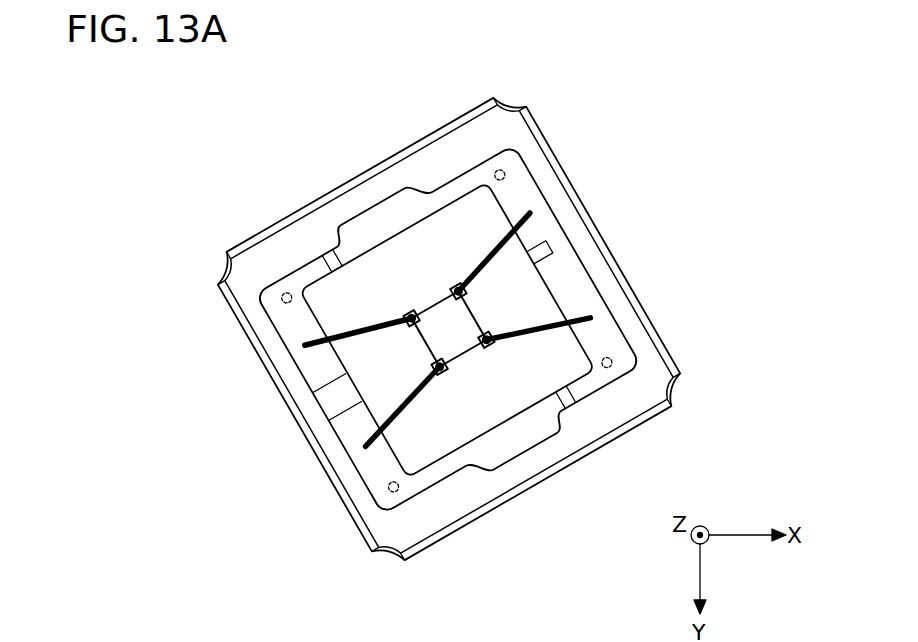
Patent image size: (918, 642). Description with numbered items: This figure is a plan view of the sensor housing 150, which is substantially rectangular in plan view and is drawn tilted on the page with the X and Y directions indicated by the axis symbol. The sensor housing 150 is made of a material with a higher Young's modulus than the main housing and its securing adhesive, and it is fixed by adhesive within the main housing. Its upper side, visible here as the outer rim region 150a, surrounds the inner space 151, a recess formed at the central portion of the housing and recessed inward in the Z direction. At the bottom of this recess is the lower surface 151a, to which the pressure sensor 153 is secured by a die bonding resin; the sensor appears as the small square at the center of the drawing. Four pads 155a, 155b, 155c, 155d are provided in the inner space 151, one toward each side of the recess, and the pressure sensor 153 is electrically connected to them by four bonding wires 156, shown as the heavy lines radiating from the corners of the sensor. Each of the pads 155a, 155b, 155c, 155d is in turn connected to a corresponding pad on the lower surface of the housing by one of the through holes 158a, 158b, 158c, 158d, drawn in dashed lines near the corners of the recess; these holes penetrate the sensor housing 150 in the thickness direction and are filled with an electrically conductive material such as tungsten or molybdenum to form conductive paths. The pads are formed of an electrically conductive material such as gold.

The sensor housing 150 is at (660, 372).
The upper surface of package base 150a is at (400, 177).
The inner space 151 is at (463, 178).
The lower surface 151a is at (340, 283).
The pressure sensor 153 is at (462, 365).
The pad 155a is at (512, 148).
The pad 155b is at (650, 412).
The pad 155c is at (373, 480).
The pad 155d is at (285, 318).
The bonding wires 156 is at (527, 224).
The through hole 158a is at (510, 172).
The through hole 158b is at (607, 363).
The through hole 158c is at (393, 487).
The through hole 158d is at (287, 298).